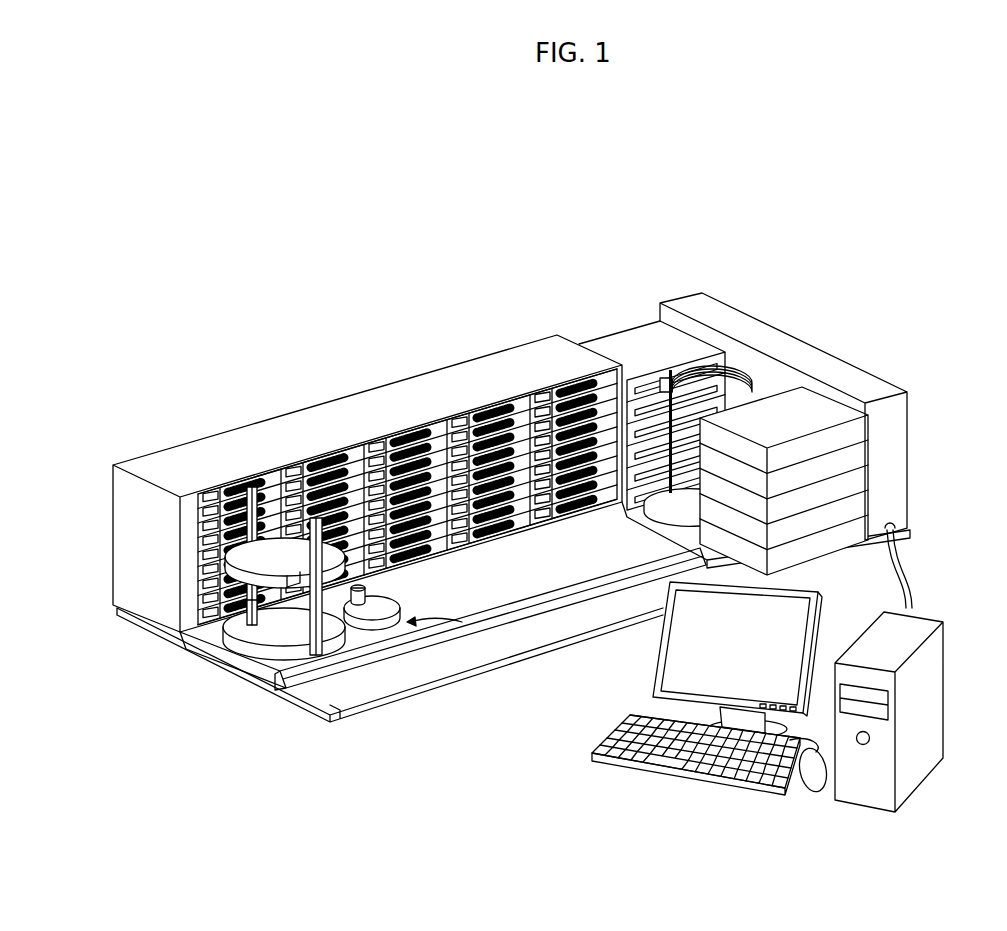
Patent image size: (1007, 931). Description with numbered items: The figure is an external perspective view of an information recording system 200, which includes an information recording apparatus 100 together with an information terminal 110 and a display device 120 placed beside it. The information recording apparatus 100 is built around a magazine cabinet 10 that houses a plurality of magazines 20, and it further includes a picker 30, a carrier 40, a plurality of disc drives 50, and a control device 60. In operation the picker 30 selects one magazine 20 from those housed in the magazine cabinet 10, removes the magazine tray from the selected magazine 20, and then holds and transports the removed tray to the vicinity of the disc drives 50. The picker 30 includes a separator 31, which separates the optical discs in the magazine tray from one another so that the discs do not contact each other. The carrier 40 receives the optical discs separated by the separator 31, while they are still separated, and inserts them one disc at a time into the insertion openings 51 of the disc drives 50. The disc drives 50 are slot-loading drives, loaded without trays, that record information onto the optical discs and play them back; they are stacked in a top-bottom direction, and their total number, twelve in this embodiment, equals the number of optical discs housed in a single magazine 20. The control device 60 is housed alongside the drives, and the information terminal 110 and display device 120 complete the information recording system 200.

The information recording system 200 is at (835, 231).
The information recording apparatus 100 is at (244, 354).
The magazine cabinet 10 is at (163, 456).
The magazines 20 is at (553, 512).
The picker 30 is at (213, 655).
The separator 31 is at (409, 604).
The carrier 40 is at (722, 376).
The disc drives 50 is at (655, 330).
The insertion openings 51 is at (662, 386).
The control device 60 is at (835, 367).
The information terminal 110 is at (935, 612).
The display device 120 is at (657, 668).